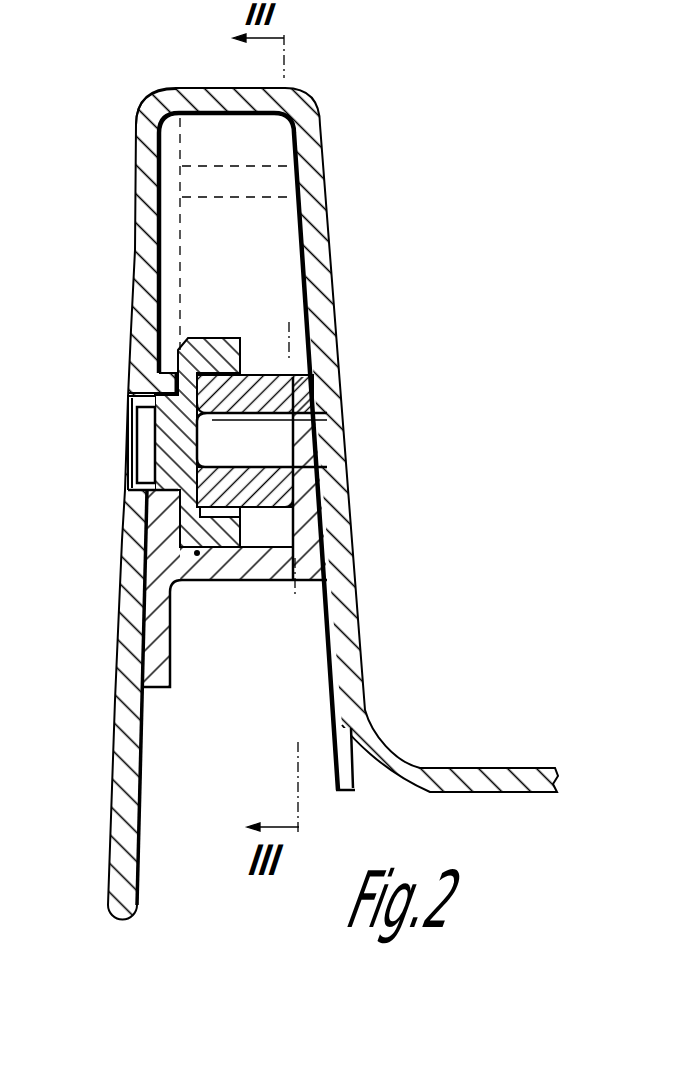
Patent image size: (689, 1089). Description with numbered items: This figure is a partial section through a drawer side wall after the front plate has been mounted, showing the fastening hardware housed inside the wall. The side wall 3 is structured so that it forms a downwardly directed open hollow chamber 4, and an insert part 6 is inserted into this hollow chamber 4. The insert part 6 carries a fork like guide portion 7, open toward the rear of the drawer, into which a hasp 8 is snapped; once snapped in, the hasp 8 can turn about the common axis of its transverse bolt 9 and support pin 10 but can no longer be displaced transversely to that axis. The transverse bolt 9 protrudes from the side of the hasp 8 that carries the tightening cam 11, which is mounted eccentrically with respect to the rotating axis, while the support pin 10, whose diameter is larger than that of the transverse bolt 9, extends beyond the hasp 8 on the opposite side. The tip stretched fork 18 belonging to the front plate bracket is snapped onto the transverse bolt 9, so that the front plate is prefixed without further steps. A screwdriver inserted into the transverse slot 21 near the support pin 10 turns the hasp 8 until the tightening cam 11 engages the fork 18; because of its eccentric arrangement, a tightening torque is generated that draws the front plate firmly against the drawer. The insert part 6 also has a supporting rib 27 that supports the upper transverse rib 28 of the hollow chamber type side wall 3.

The side wall 3 is at (309, 440).
The hollow chamber 4 is at (128, 809).
The insert part 6 is at (248, 534).
The fork like guide portion 7 is at (221, 389).
The hasp 8 is at (178, 588).
The transverse bolt 9 is at (323, 458).
The support pin 10 is at (117, 442).
The tightening cam 11 is at (305, 403).
The tip stretched fork 18 is at (319, 519).
The transverse slot 21 is at (102, 482).
The supporting rib 27 is at (108, 119).
The upper transverse rib 28 is at (192, 66).